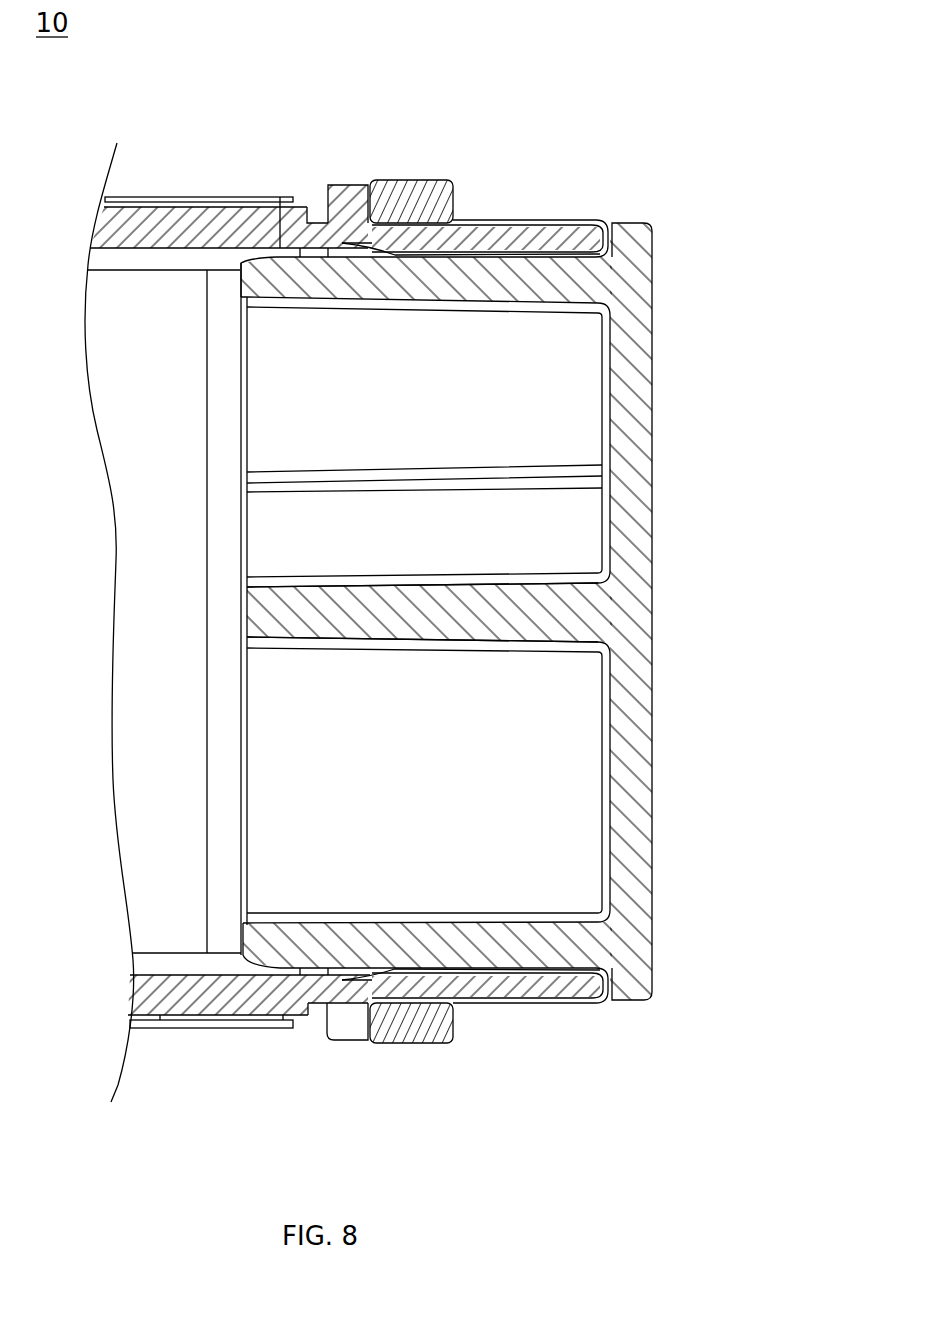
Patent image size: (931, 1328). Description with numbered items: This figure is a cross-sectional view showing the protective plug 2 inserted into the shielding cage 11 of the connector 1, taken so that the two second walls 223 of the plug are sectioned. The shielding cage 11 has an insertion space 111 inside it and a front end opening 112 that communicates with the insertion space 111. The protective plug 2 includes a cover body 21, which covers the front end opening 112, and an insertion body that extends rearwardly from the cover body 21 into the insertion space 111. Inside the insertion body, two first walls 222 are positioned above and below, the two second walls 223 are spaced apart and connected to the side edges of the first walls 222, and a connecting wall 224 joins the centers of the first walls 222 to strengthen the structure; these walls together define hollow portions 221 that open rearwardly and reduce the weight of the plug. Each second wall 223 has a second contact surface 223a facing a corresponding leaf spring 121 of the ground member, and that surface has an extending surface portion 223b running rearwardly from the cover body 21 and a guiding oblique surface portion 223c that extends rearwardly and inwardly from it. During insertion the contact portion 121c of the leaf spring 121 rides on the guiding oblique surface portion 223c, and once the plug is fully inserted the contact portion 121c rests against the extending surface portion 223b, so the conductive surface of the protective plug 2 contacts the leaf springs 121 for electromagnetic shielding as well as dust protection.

The connector 1 is at (357, 641).
The shielding cage 11 is at (229, 654).
The insertion space 111 is at (146, 892).
The front end opening 112 is at (598, 1000).
The leaf spring 121 is at (481, 601).
The contact portion 121c is at (405, 258).
The protective plug 2 is at (431, 613).
The cover body 21 is at (652, 593).
The first wall 222 is at (424, 613).
The hollow portion 221 is at (278, 535).
The second wall 223 is at (418, 613).
The second contact surface 223a is at (338, 613).
The extending surface portion 223b is at (372, 614).
The guiding oblique surface portion 223c is at (283, 245).
The connecting wall 224 is at (425, 607).